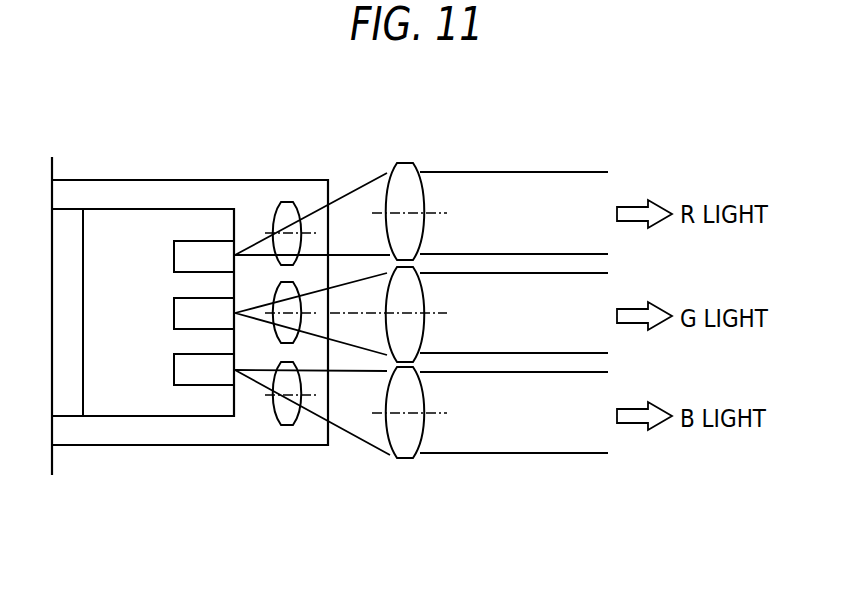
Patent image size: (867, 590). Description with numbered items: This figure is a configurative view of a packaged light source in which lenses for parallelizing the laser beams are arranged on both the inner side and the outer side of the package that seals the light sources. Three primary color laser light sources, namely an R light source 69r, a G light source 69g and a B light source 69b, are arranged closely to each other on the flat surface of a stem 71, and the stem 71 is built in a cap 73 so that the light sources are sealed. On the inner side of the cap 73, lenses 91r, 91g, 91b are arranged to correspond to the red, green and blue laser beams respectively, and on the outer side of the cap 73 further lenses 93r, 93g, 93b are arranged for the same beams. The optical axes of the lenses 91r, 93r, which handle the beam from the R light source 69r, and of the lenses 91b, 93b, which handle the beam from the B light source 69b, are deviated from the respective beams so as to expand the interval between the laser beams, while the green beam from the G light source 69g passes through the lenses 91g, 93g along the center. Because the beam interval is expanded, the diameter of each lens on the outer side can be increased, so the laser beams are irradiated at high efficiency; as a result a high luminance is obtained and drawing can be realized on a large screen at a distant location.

The stem 71 is at (138, 217).
The cap 73 is at (220, 179).
The R light source 69r is at (174, 255).
The G light source 69g is at (174, 313).
The B light source 69b is at (174, 370).
The lens 91r is at (287, 206).
The lens 91g is at (272, 334).
The lens 91b is at (285, 417).
The lens 93r is at (406, 172).
The lens 93g is at (417, 300).
The lens 93b is at (417, 437).